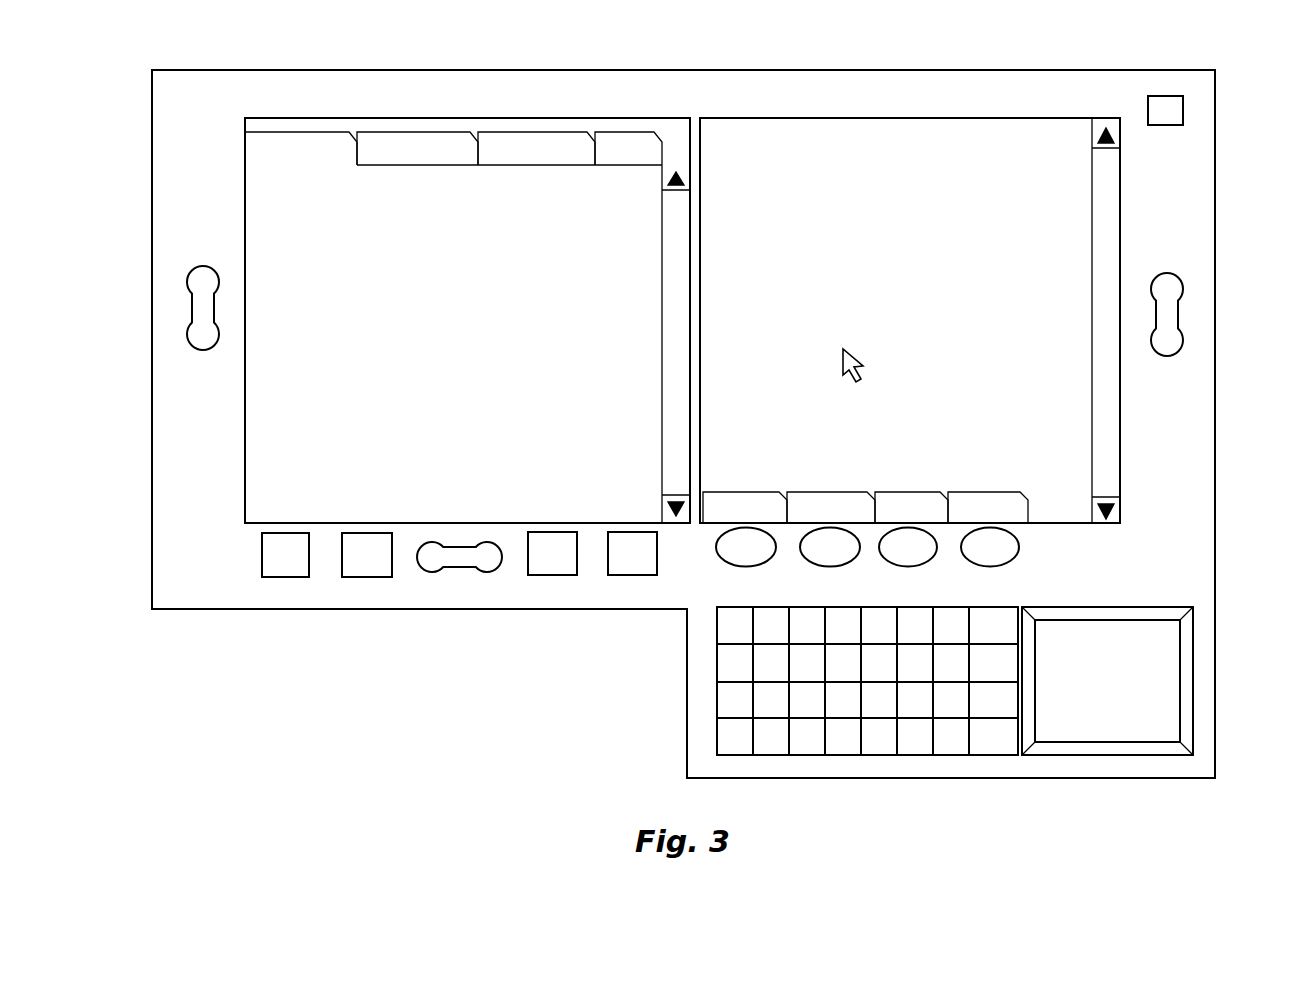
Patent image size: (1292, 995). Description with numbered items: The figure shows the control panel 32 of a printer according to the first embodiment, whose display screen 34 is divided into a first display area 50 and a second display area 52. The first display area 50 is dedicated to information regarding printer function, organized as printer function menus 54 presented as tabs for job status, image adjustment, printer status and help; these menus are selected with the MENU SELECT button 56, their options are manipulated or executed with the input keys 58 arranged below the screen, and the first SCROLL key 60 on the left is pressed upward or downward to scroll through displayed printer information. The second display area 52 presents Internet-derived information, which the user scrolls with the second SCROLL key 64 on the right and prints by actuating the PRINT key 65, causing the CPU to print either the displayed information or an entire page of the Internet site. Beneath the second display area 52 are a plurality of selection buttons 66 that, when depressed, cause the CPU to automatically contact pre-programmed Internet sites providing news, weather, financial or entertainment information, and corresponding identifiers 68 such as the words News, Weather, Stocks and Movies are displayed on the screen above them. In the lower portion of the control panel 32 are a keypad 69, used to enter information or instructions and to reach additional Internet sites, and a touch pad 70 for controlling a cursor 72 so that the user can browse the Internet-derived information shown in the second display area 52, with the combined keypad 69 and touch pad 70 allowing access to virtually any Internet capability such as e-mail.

The control panel 32 is at (153, 592).
The display screen 34 is at (848, 118).
The first display area 50 is at (470, 360).
The second display area 52 is at (886, 219).
The printer function menus 54 is at (343, 135).
The MENU SELECT button 56 is at (498, 568).
The input keys 58 is at (265, 577).
The first SCROLL key 60 is at (187, 310).
The second SCROLL key 64 is at (1180, 312).
The PRINT key 65 is at (1183, 108).
The selection buttons 66 is at (745, 558).
The identifiers 68 is at (775, 492).
The keypad 69 is at (873, 755).
The touch pad 70 is at (1147, 677).
The cursor 72 is at (860, 357).